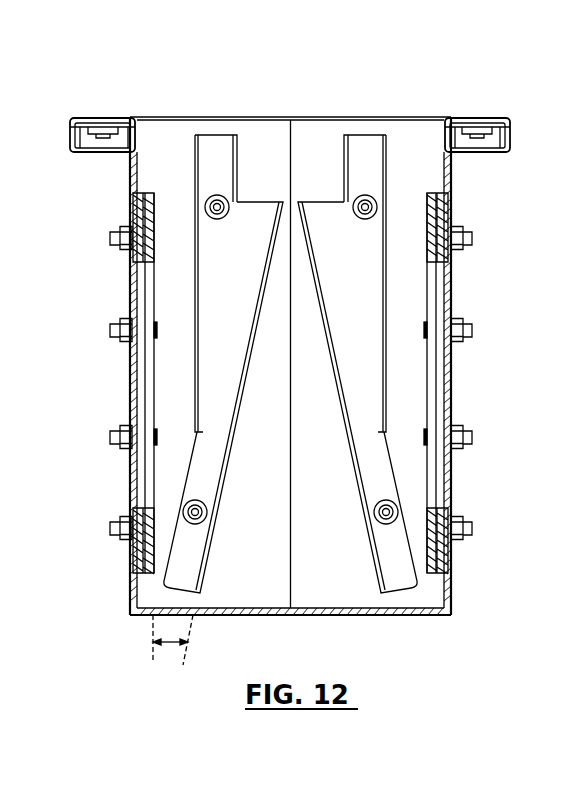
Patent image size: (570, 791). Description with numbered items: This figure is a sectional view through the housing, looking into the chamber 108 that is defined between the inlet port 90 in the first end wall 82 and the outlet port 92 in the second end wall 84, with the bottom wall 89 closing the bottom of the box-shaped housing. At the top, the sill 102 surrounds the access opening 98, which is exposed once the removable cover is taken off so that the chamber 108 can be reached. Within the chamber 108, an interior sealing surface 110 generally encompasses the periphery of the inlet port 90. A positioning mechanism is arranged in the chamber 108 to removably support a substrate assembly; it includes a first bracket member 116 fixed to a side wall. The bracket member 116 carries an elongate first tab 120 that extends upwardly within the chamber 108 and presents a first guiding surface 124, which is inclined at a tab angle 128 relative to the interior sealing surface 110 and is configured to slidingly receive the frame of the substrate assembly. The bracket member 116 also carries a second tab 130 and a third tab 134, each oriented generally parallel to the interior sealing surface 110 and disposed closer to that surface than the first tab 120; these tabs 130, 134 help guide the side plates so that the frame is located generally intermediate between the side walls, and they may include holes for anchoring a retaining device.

The first end wall 82 is at (130, 607).
The second end wall 84 is at (451, 585).
The bottom wall 89 is at (352, 616).
The inlet port 90 is at (150, 400).
The outlet port 92 is at (436, 363).
The access opening 98 is at (384, 122).
The sill 102 is at (480, 118).
The chamber 108 is at (426, 281).
The interior sealing surface 110 is at (155, 221).
The first bracket member 116 is at (215, 145).
The first tab 120 is at (245, 358).
The first guiding surface 124 is at (170, 397).
The tab angle 128 is at (178, 642).
The second tab 130 is at (239, 237).
The third tab 134 is at (187, 158).